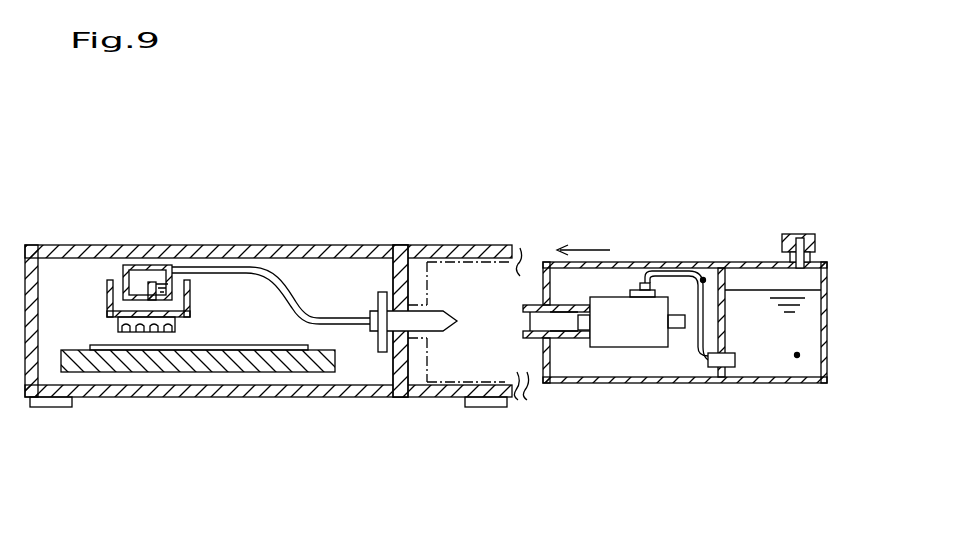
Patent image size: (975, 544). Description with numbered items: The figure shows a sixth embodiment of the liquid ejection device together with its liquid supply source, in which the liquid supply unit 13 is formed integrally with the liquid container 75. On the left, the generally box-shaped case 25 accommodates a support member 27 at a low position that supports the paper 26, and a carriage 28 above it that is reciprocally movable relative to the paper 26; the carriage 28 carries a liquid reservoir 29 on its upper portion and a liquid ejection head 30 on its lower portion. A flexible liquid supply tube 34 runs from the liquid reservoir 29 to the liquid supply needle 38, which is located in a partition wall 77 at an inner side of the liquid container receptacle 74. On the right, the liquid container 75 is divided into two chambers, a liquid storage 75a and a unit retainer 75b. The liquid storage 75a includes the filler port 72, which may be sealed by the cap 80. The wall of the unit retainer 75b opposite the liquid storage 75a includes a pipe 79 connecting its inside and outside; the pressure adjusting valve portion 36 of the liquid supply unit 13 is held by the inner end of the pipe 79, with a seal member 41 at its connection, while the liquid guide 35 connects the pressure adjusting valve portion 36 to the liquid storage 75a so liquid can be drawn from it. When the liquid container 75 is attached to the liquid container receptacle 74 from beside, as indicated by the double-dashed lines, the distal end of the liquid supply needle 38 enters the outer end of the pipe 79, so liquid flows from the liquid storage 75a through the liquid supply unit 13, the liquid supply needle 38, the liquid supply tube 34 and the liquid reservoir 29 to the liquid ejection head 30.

The case 25 is at (52, 245).
The liquid reservoir 29 is at (158, 265).
The carriage 28 is at (107, 300).
The liquid ejection head 30 is at (118, 325).
The paper 26 is at (220, 350).
The liquid supply tube 34 is at (293, 268).
The support member 27 is at (318, 318).
The partition wall 77 is at (404, 245).
The liquid supply needle 38 is at (436, 324).
The pipe 79 is at (525, 318).
The liquid container 75 is at (412, 397).
The liquid container receptacle 74 is at (516, 385).
The seal member 41 is at (588, 345).
The pressure adjusting valve portion 36 is at (627, 350).
The liquid guide 35 is at (698, 352).
The liquid supply unit 13 is at (700, 420).
The liquid storage 75a is at (797, 358).
The unit retainer 75b is at (703, 278).
The filler port 72 is at (800, 234).
The cap 80 is at (814, 245).